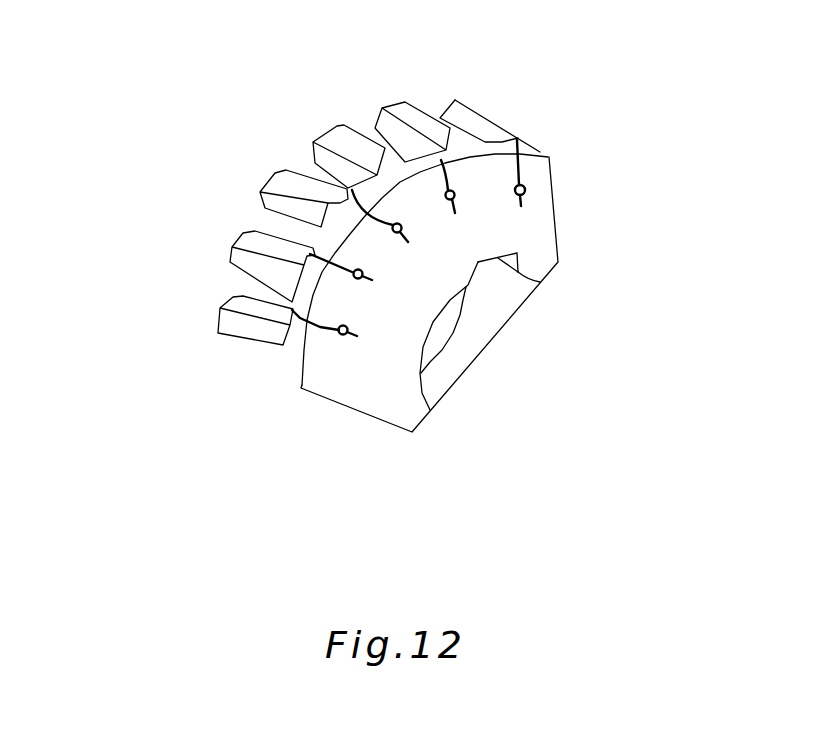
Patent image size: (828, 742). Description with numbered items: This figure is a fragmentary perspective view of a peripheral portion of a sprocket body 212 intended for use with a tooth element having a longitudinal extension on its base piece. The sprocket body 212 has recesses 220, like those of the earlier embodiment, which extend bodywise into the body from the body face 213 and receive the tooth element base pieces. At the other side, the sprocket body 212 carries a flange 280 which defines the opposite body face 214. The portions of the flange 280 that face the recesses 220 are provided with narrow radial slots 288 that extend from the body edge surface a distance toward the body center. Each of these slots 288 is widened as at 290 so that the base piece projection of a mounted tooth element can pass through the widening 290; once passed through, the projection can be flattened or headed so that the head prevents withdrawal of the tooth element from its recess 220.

The sprocket body 212 is at (397, 402).
The body face 213 is at (232, 247).
The opposite body face 214 is at (432, 313).
The recesses 220 is at (362, 123).
The flange 280 is at (288, 355).
The radial slots 288 is at (537, 153).
The widenings 290 is at (528, 191).